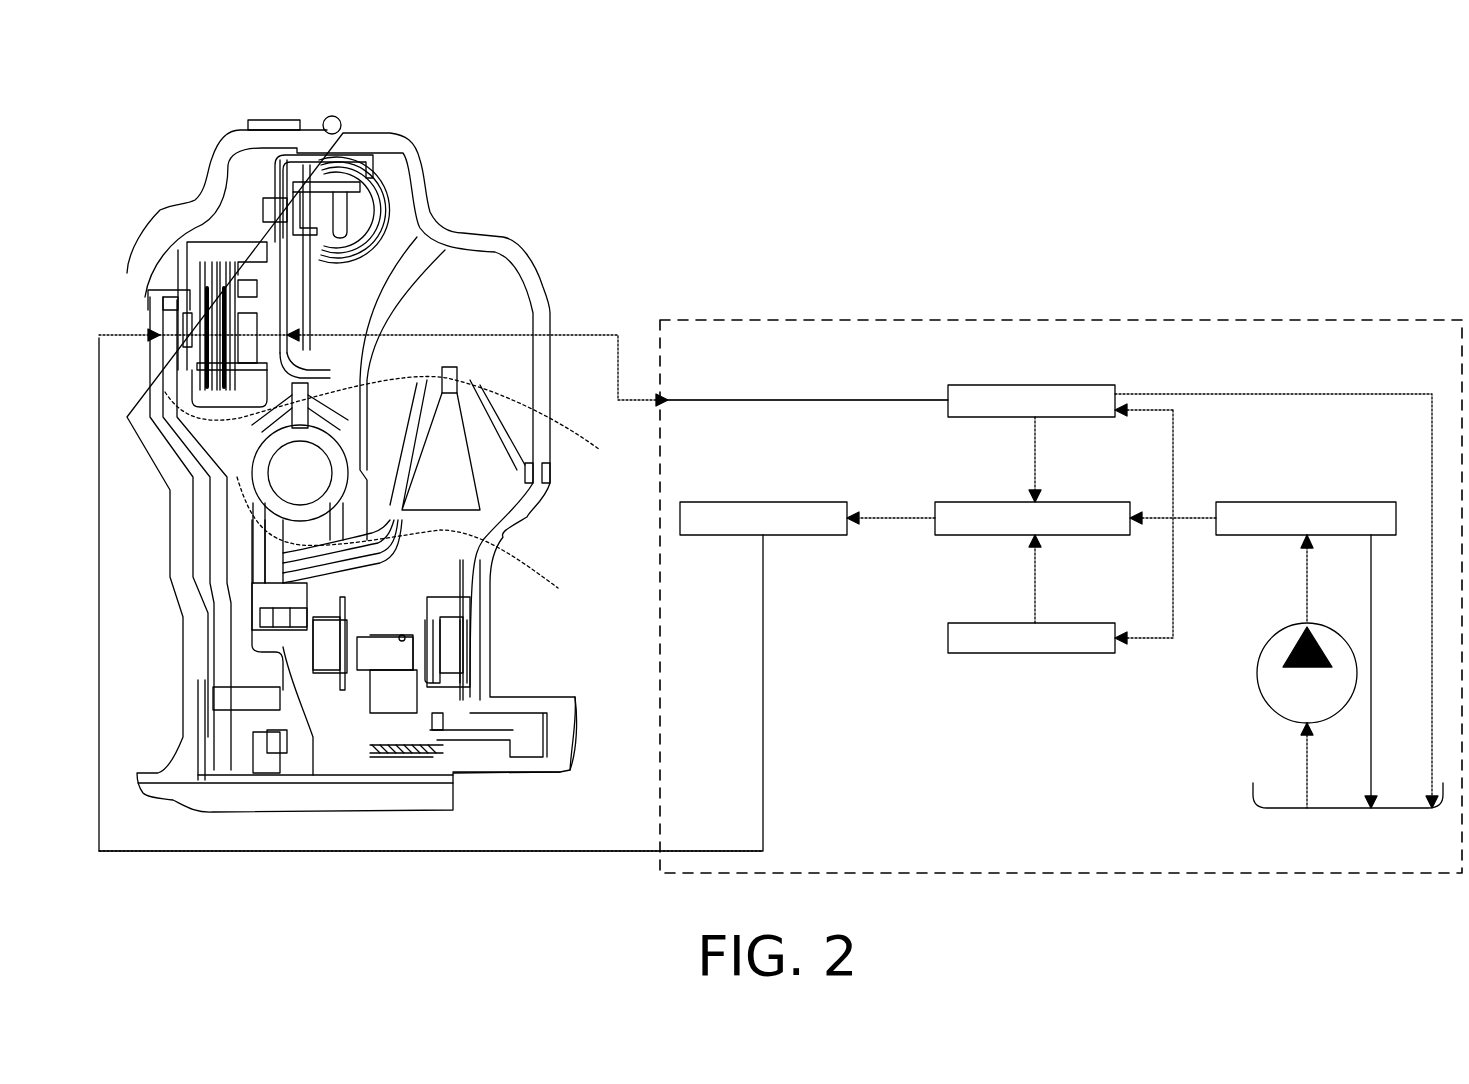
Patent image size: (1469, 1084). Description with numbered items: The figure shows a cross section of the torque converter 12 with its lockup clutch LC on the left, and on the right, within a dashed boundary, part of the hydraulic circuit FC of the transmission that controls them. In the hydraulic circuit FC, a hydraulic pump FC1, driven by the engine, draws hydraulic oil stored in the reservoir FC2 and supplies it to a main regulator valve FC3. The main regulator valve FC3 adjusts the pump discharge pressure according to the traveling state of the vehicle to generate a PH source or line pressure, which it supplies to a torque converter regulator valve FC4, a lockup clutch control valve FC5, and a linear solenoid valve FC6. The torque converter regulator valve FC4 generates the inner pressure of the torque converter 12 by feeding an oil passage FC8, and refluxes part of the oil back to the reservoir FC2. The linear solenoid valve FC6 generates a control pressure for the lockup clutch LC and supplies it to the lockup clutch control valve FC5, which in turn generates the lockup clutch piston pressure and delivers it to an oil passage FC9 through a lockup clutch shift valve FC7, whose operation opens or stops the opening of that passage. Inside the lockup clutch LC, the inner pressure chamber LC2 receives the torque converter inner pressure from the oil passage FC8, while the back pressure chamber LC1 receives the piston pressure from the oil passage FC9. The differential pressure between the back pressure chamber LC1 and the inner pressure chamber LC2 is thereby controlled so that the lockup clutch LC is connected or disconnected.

The torque converter 12 is at (385, 168).
The lockup clutch LC is at (180, 287).
The back pressure chamber LC1 is at (408, 424).
The inner pressure chamber LC2 is at (425, 545).
The hydraulic circuit FC is at (1373, 312).
The hydraulic pump FC1 is at (1265, 713).
The reservoir FC2 is at (1275, 813).
The main regulator valve FC3 is at (1355, 502).
The torque converter regulator valve FC4 is at (1070, 385).
The lockup clutch control valve FC5 is at (1068, 502).
The linear solenoid valve FC6 is at (1070, 623).
The lockup clutch shift valve FC7 is at (788, 502).
The oil passage FC8 is at (750, 400).
The oil passage FC9 is at (488, 851).